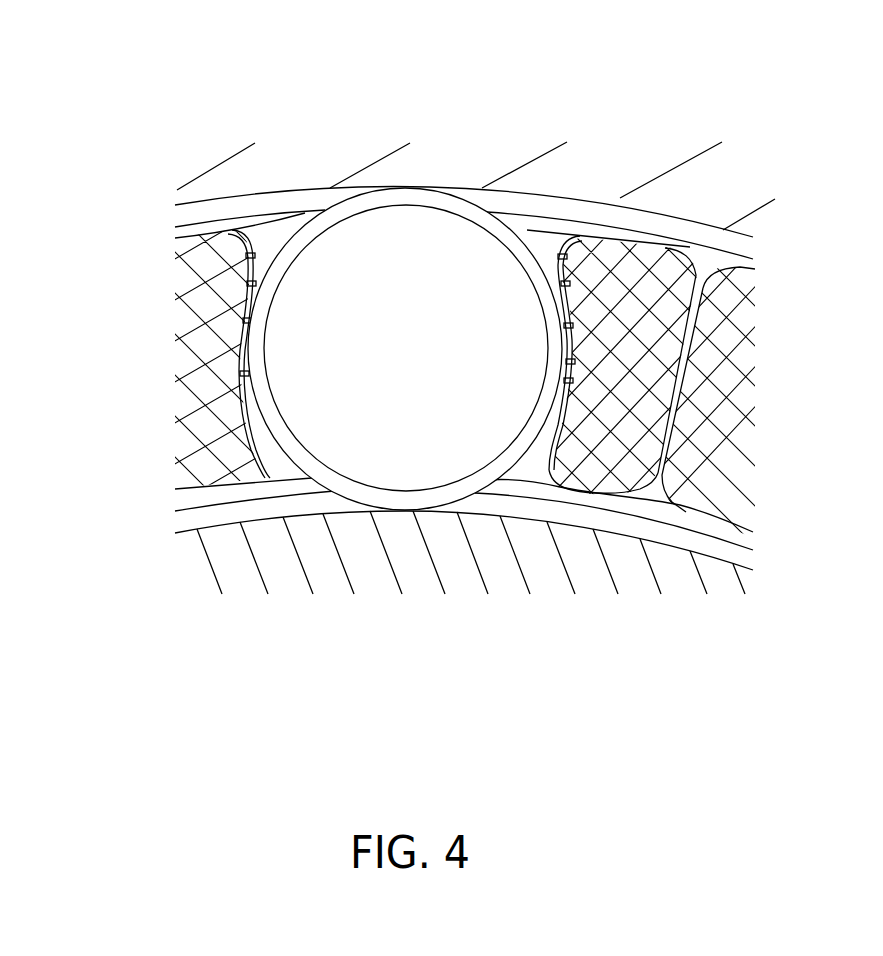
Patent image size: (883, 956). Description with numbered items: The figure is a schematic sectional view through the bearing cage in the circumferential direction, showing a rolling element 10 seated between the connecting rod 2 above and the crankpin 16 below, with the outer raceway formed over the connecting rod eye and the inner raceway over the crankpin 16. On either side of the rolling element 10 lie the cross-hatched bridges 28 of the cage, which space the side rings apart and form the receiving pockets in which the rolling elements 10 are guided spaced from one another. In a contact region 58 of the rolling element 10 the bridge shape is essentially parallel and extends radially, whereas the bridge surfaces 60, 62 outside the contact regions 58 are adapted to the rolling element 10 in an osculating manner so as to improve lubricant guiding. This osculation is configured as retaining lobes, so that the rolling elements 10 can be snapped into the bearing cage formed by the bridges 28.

The connecting rod 2 is at (432, 178).
The rolling element 10 is at (425, 402).
The crankpin 16 is at (352, 556).
The bridge 28 is at (637, 308).
The contact region 58 is at (241, 345).
The bridge surface 60 is at (567, 263).
The bridge surface 62 is at (270, 458).